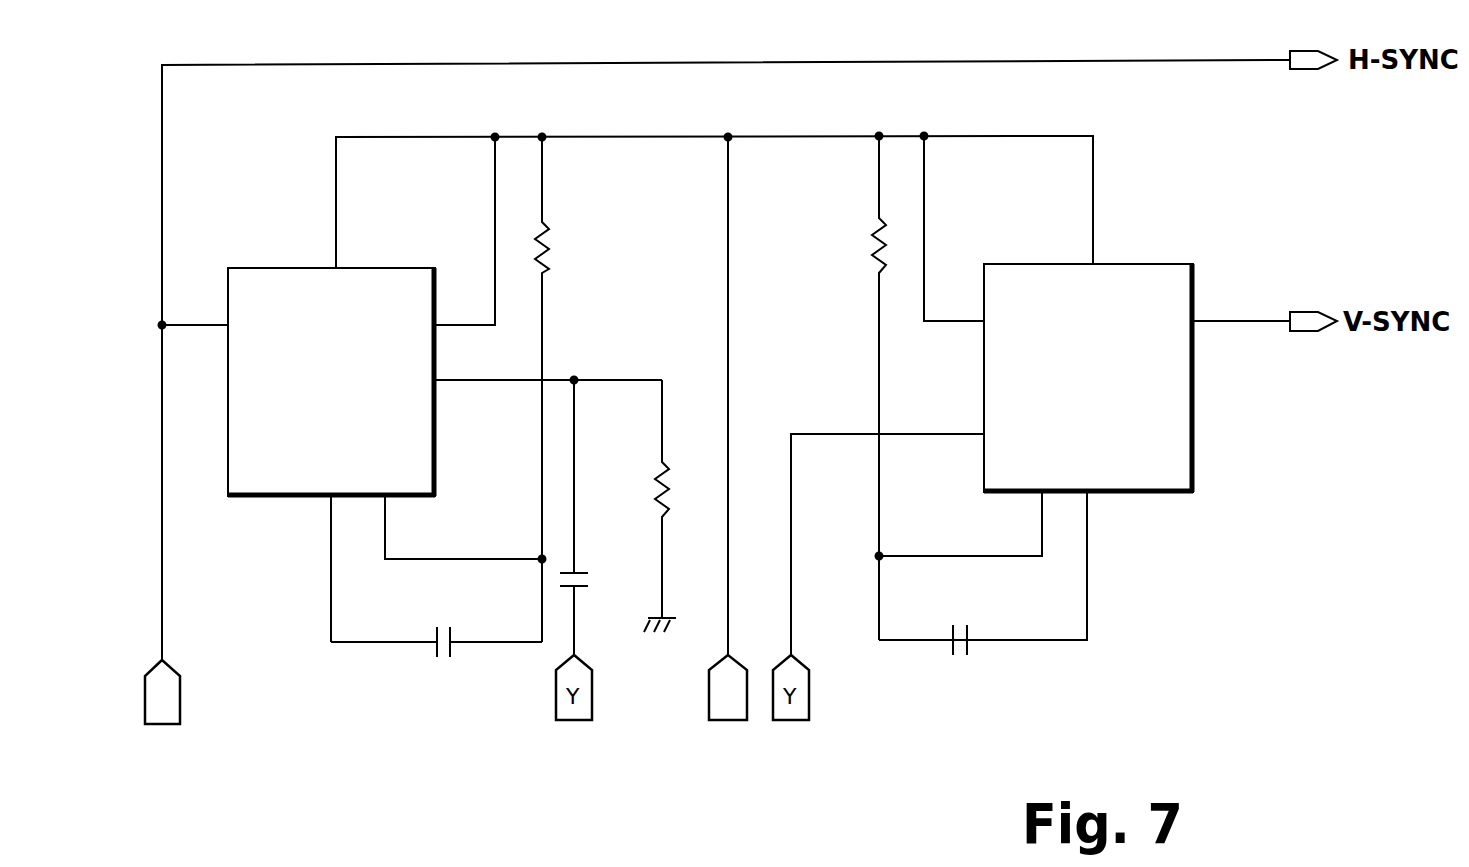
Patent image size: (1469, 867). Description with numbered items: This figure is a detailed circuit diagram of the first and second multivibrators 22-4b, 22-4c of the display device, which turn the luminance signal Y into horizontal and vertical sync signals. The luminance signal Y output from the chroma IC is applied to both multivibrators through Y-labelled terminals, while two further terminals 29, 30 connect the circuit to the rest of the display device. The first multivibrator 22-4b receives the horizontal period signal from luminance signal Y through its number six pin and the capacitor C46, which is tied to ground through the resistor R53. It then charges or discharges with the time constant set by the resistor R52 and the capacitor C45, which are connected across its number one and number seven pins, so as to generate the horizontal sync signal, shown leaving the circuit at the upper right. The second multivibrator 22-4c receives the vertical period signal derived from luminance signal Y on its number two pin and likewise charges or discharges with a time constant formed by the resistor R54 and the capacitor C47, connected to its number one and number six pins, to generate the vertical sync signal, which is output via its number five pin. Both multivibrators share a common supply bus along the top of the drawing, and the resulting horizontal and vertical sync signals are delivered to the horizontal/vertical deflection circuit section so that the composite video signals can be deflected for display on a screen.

The first multivibrator 22-4b is at (285, 498).
The second multivibrator 22-4c is at (1122, 493).
The resistor R52 is at (569, 389).
The resistor R53 is at (678, 506).
The resistor R54 is at (848, 388).
The capacitor C45 is at (436, 659).
The capacitor C46 is at (600, 517).
The capacitor C47 is at (983, 656).
The connector terminal 29 is at (162, 692).
The connector terminal 30 is at (728, 428).